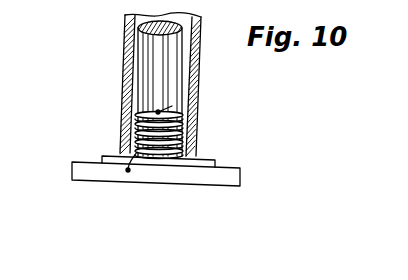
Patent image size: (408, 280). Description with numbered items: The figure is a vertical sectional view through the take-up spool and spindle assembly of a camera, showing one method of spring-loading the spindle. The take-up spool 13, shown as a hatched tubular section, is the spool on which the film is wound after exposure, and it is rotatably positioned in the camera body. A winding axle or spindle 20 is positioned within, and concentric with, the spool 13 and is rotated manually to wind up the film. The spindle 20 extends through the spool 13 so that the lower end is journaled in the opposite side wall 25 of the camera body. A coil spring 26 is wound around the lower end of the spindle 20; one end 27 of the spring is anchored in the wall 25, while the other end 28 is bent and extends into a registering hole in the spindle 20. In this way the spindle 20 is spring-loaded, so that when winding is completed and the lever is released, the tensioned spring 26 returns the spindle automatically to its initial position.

The take-up spool 13 is at (197, 92).
The winding axle or spindle 20 is at (178, 70).
The opposite side wall 25 is at (229, 176).
The coil spring 26 is at (180, 113).
The one end of the coil spring 27 is at (127, 172).
The other end of the coil spring 28 is at (158, 112).